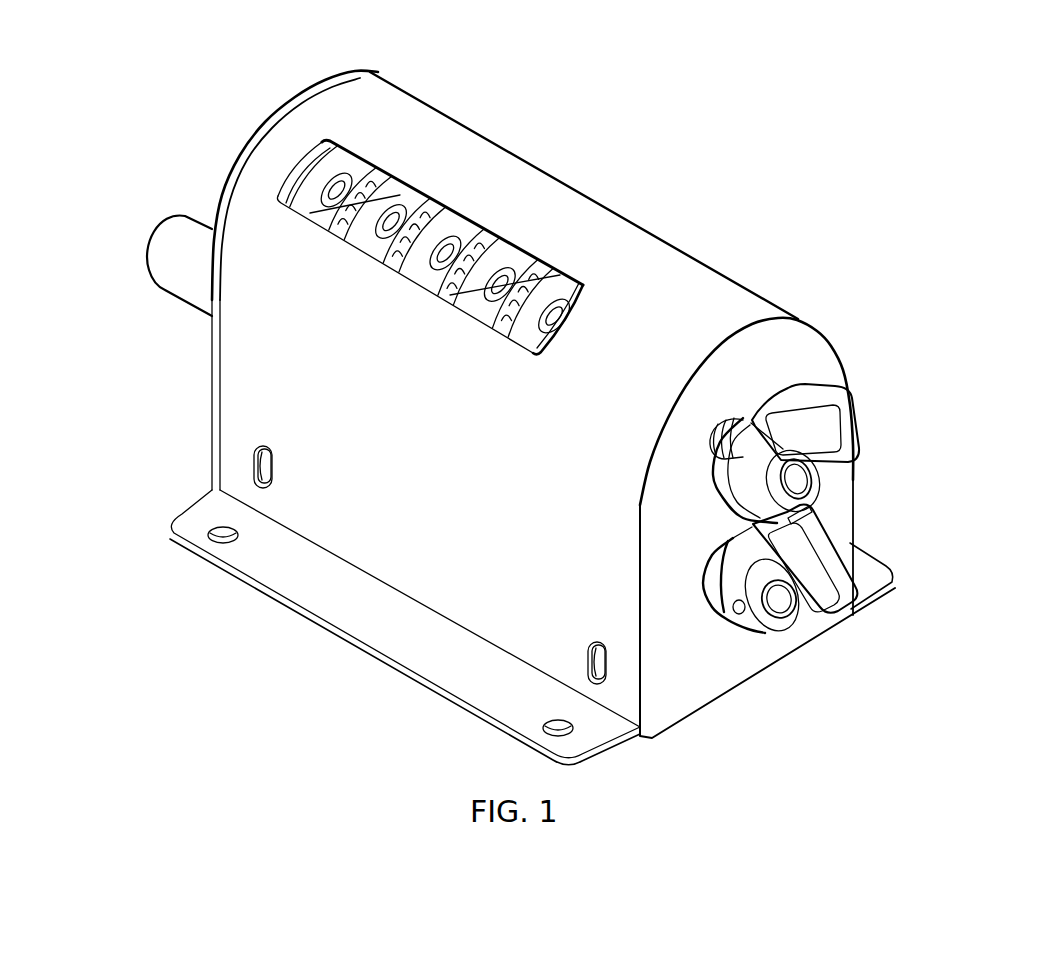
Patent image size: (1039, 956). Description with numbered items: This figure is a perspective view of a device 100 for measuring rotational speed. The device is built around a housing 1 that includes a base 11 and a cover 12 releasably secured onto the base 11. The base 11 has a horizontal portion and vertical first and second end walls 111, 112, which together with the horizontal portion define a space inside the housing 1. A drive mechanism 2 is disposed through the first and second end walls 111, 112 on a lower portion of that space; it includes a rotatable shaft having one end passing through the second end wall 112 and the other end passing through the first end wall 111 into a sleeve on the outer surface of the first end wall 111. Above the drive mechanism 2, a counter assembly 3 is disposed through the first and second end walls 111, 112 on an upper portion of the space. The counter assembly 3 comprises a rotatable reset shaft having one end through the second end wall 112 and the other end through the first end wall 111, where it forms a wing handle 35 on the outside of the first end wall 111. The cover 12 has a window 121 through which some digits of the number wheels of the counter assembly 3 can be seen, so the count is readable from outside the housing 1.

The counter 100 is at (730, 166).
The housing 1 is at (772, 285).
The base 11 is at (820, 670).
The first end wall 111 is at (828, 360).
The second end wall 112 is at (245, 162).
The cover 12 is at (518, 197).
The window 121 is at (540, 338).
The drive mechanism 2 is at (140, 228).
The counter assembly 3 is at (822, 502).
The wing handle 35 is at (845, 583).